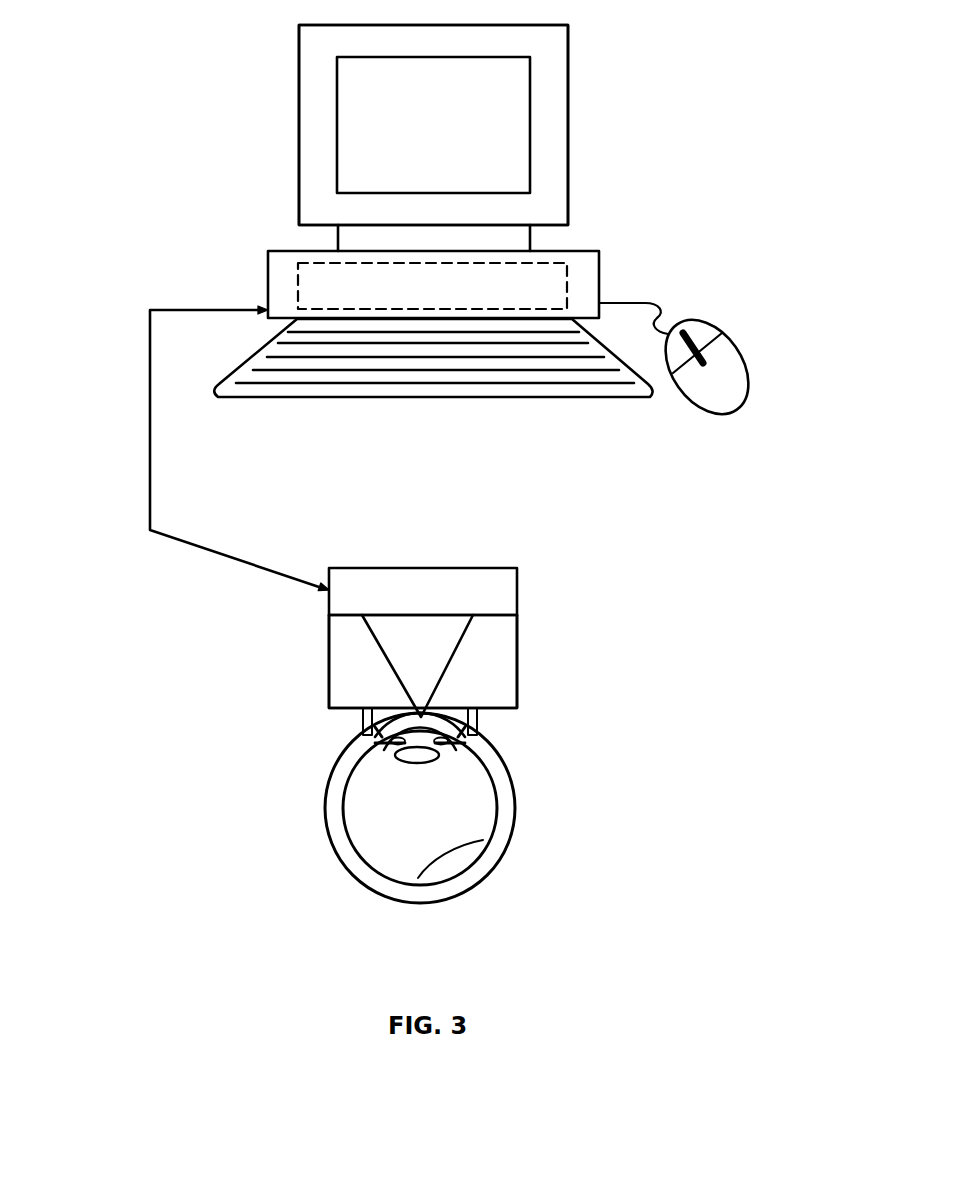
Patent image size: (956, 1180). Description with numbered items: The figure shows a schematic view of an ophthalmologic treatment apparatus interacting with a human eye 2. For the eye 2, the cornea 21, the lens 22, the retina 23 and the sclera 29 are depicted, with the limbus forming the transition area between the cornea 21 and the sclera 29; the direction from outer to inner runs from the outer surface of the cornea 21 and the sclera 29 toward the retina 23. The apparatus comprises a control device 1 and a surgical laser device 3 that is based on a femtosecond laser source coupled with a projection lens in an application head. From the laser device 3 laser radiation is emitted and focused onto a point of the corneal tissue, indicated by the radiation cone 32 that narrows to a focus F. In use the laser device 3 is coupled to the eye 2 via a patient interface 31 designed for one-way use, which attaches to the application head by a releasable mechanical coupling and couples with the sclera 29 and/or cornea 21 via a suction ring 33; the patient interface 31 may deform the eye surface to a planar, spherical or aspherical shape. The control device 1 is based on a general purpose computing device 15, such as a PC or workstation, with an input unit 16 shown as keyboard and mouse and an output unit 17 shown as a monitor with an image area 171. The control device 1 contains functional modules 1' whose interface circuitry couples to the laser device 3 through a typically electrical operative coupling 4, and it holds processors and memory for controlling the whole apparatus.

The control device 1 is at (369, 125).
The functional modules 1' is at (481, 269).
The general purpose computing device 15 is at (275, 283).
The input unit 16 is at (681, 418).
The output unit 17 is at (558, 55).
The image area 171 is at (522, 118).
The operative coupling 4 is at (170, 538).
The surgical laser device 3 is at (510, 585).
The patient interface 31 is at (493, 675).
The radiation cone 32 is at (405, 660).
The suction ring 33 is at (430, 716).
The human eye 2 is at (315, 855).
The cornea 21 is at (393, 724).
The lens 22 is at (427, 758).
The retina 23 is at (483, 840).
The sclera 29 is at (493, 734).
The focus F is at (494, 736).